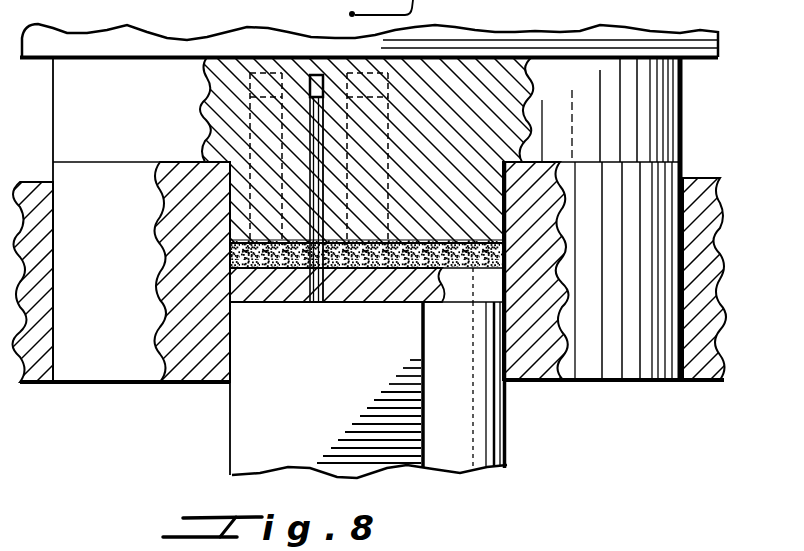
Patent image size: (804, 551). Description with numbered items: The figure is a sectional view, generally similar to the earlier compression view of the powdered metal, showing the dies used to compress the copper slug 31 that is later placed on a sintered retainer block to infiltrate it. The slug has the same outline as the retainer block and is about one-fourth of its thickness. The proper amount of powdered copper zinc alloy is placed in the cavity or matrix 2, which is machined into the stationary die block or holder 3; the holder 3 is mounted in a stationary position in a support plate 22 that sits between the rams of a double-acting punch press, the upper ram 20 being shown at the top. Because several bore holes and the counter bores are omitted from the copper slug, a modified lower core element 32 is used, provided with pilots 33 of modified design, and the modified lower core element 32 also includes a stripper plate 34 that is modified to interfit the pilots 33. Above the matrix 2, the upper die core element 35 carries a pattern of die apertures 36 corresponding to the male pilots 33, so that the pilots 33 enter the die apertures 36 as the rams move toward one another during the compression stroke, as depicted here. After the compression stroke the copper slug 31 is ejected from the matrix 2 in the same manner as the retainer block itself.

The matrix 2 is at (488, 288).
The holder 3 is at (652, 253).
The upper ram 20 is at (681, 47).
The support plate 22 is at (703, 279).
The copper slug 31 is at (495, 250).
The modified lower core element 32 is at (478, 430).
The pilots 33 is at (313, 128).
The stripper plate 34 is at (297, 290).
The upper die core element 35 is at (648, 108).
The die apertures 36 is at (265, 73).